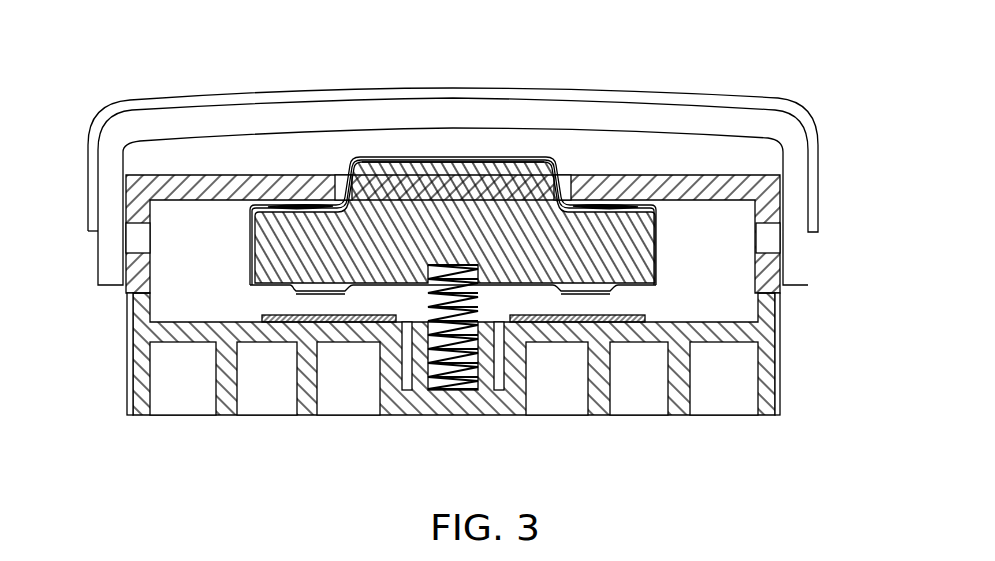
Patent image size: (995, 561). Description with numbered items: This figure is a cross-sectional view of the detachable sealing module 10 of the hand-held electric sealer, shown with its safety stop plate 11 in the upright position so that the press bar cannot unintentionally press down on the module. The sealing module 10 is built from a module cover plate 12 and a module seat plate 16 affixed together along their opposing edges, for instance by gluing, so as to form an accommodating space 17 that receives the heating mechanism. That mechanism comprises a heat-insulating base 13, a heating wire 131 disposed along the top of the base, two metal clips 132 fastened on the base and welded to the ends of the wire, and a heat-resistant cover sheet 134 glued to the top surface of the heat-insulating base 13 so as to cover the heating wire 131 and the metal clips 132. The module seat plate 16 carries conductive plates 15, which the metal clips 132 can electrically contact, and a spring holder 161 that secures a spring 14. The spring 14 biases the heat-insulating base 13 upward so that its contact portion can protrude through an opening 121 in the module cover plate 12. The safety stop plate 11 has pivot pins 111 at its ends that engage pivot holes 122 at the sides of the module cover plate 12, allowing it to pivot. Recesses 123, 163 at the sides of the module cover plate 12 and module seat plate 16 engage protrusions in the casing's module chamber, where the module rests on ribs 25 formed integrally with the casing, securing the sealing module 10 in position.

The sealing module 10 is at (150, 76).
The safety stop plate 11 is at (782, 105).
The pivot pins 111 is at (770, 242).
The module cover plate 12 is at (652, 176).
The opening 121 is at (343, 174).
The pivot holes 122 is at (777, 205).
The recesses 123 is at (132, 310).
The heat-insulating base 13 is at (475, 190).
The heating wire 131 is at (432, 160).
The metal clips 132 is at (245, 282).
The heat-resistant cover sheet 134 is at (398, 157).
The spring 14 is at (443, 375).
The conductive plates 15 is at (272, 325).
The module seat plate 16 is at (755, 400).
The spring holder 161 is at (423, 393).
The recesses 163 is at (130, 368).
The accommodating space 17 is at (163, 268).
The ribs 25 is at (598, 400).